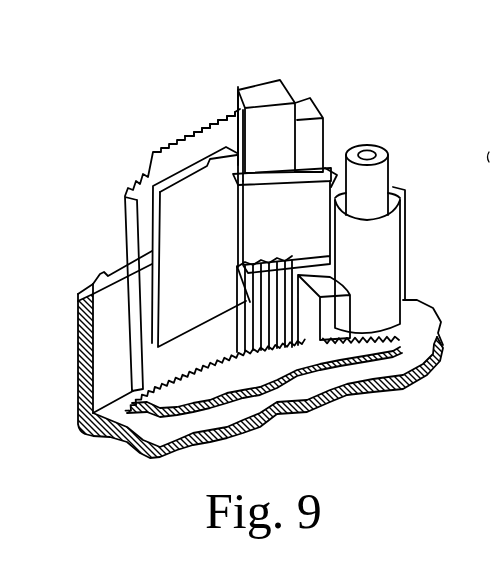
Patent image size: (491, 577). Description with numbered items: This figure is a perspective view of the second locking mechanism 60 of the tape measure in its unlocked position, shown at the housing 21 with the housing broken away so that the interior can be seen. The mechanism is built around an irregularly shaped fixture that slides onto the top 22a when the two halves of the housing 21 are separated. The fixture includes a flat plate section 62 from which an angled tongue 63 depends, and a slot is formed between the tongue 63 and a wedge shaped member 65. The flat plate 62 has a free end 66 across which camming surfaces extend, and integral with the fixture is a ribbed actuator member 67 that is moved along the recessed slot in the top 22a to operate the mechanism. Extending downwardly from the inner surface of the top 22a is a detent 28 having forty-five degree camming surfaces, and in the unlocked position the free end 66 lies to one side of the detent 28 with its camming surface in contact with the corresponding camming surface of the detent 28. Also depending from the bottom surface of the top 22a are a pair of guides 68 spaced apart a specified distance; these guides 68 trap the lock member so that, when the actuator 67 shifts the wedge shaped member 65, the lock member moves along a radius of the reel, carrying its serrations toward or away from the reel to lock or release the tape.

The housing 21 is at (393, 136).
The top 22a is at (100, 275).
The detent 28 is at (145, 273).
The second locking mechanism 60 is at (176, 122).
The flat plate section 62 is at (173, 225).
The angled tongue 63 is at (317, 230).
The wedge shaped member 65 is at (310, 108).
The free end 66 is at (154, 155).
The ribbed actuator member 67 is at (199, 123).
The guides 68 is at (247, 340).